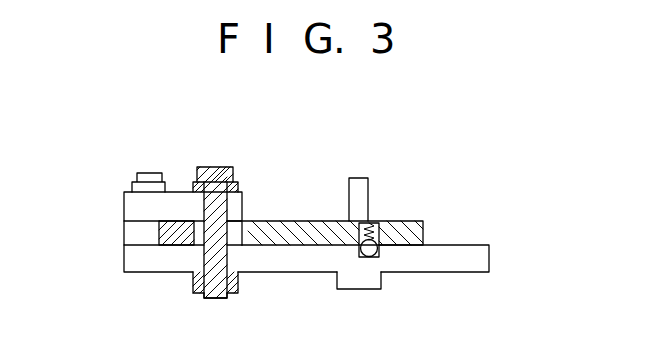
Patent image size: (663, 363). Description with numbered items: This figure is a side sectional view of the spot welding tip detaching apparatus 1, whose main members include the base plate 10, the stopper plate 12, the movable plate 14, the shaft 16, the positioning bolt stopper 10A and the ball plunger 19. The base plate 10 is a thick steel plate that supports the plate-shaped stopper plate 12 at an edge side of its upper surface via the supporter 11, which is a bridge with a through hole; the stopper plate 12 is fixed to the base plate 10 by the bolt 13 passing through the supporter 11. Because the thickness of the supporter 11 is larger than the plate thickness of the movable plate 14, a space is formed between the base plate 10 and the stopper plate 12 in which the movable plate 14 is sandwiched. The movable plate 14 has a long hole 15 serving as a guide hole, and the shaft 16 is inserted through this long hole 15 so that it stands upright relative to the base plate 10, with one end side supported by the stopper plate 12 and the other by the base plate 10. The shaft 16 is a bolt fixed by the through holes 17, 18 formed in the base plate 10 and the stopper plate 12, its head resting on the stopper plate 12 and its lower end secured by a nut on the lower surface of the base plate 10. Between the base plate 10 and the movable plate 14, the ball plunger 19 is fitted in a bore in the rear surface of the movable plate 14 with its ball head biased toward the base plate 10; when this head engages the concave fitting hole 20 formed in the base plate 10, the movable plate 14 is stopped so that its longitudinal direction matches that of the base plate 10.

The spot welding tip detaching apparatus 1 is at (449, 174).
The base plate 10 is at (128, 259).
The positioning bolt stopper 10A is at (352, 180).
The supporter 11 is at (128, 233).
The stopper plate 12 is at (128, 203).
The bolt 13 is at (152, 174).
The movable plate 14 is at (402, 220).
The long hole 15 is at (230, 232).
The shaft 16 is at (203, 296).
The through hole 17 is at (204, 182).
The through hole 18 is at (218, 282).
The ball plunger 19 is at (377, 221).
The fitting hole 20 is at (357, 247).